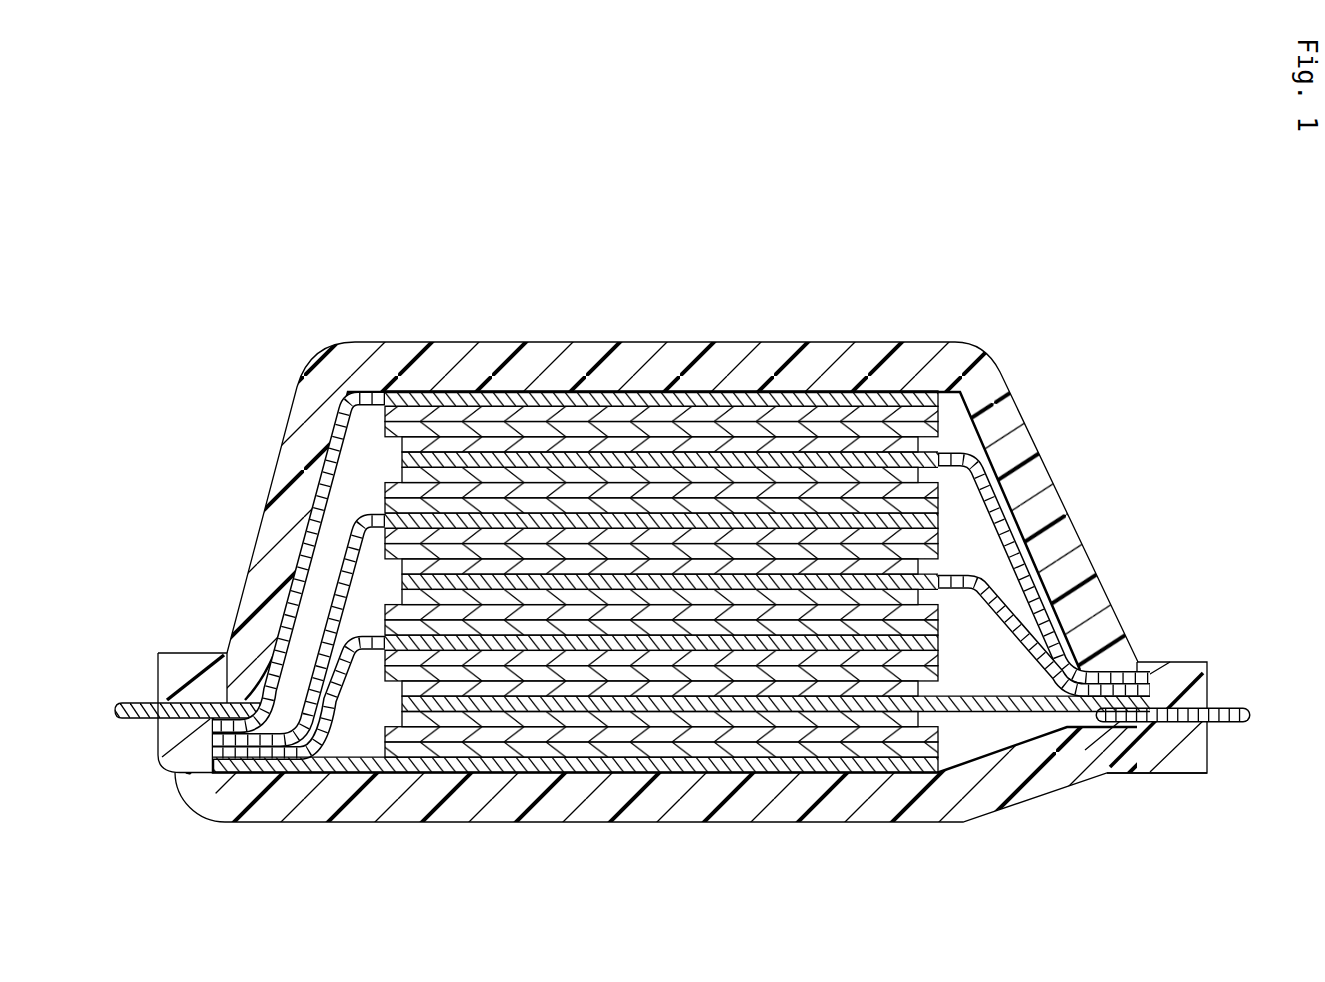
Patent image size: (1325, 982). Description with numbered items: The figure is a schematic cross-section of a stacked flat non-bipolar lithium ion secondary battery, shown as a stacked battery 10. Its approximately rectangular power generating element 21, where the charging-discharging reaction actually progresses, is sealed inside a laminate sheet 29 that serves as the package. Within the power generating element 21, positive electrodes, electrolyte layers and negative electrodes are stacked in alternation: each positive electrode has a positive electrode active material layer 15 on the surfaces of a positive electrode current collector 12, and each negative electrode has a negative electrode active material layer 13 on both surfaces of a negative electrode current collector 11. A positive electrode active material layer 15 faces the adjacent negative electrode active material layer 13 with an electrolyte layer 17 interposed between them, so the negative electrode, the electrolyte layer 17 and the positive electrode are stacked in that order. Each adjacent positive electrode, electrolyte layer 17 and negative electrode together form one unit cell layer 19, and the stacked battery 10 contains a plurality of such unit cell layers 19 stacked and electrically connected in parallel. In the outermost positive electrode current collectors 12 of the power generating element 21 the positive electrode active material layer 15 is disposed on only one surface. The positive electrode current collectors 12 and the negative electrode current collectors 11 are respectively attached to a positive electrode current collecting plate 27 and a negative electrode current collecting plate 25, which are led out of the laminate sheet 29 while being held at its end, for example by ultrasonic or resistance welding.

The stacked battery 10 is at (180, 142).
The negative electrode current collector 11 is at (772, 405).
The positive electrode current collector 12 is at (556, 420).
The negative electrode active material layer 13 is at (724, 425).
The positive electrode active material layer 15 is at (602, 445).
The electrolyte layer 17 is at (661, 425).
The unit cell layer 19 is at (790, 253).
The power generating element 21 is at (948, 645).
The negative electrode current collecting plate 25 is at (136, 702).
The positive electrode current collecting plate 27 is at (1226, 707).
The laminate sheet 29 is at (1180, 660).